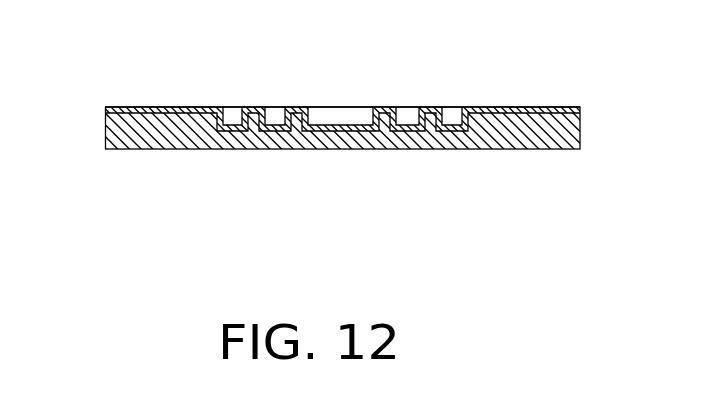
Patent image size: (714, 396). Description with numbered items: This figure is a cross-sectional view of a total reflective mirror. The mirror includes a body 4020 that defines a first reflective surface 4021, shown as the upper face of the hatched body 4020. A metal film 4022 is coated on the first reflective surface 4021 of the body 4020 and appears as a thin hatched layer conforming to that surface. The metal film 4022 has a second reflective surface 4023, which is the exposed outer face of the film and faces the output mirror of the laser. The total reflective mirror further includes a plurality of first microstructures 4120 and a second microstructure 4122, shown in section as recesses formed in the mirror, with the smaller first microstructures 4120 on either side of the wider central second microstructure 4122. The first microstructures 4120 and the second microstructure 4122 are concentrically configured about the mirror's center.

The body 4020 is at (130, 140).
The first reflective surface 4021 is at (143, 110).
The metal film 4022 is at (121, 110).
The second reflective surface 4023 is at (558, 107).
The first microstructures 4120 is at (447, 115).
The second microstructure 4122 is at (334, 115).